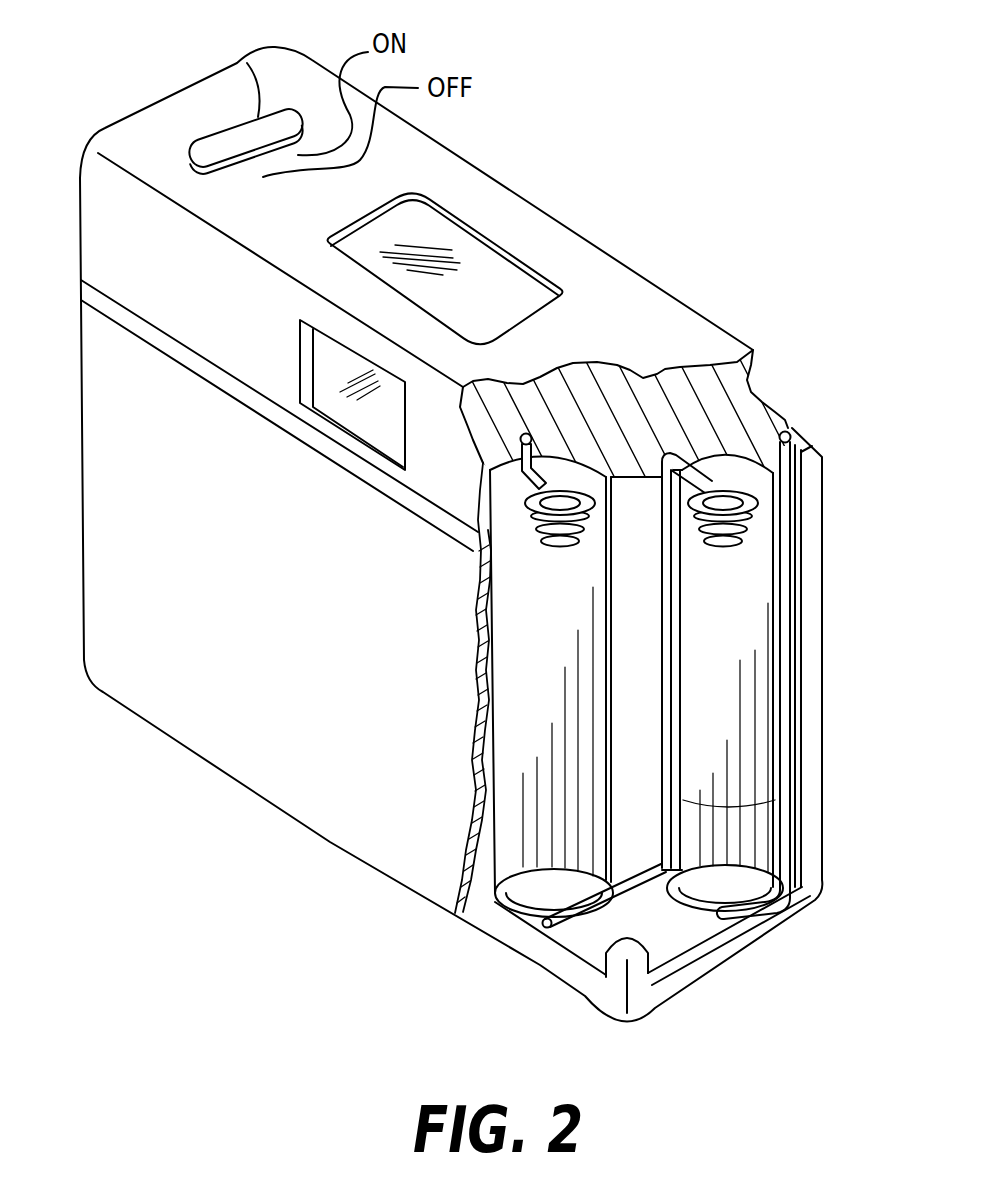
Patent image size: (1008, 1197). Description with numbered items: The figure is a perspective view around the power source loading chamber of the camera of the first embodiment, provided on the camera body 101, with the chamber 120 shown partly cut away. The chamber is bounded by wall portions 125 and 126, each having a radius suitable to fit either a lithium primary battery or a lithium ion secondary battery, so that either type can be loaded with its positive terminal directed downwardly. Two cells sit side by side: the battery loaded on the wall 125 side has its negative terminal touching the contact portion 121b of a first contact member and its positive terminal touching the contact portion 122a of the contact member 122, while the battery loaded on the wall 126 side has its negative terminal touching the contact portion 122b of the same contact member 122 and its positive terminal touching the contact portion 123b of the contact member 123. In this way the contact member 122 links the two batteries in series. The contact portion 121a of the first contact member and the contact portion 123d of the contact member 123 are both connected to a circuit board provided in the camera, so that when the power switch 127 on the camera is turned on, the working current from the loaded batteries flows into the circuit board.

The camera body 101 is at (553, 215).
The battery pack / cell compartment 120 is at (750, 680).
The contact portion 121a is at (526, 433).
The contact portion 121b is at (556, 548).
The contact member 122 is at (803, 792).
The contact portion 122a is at (561, 937).
The contact portion 122b is at (726, 548).
The contact member 123 is at (790, 643).
The contact portion 123b is at (737, 952).
The contact portion 123d is at (788, 428).
The wall portion 125 is at (507, 800).
The wall portion 126 is at (737, 730).
The power switch 127 is at (237, 63).